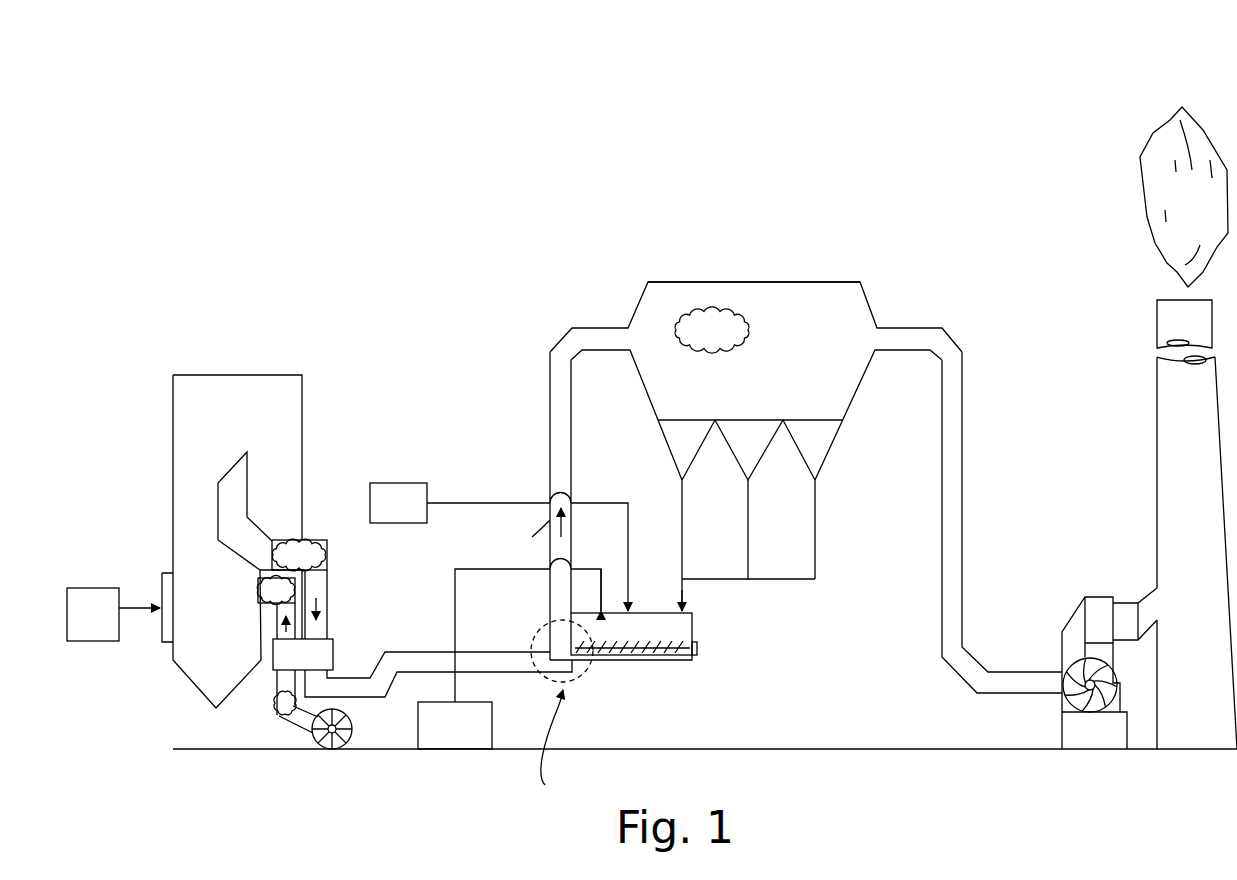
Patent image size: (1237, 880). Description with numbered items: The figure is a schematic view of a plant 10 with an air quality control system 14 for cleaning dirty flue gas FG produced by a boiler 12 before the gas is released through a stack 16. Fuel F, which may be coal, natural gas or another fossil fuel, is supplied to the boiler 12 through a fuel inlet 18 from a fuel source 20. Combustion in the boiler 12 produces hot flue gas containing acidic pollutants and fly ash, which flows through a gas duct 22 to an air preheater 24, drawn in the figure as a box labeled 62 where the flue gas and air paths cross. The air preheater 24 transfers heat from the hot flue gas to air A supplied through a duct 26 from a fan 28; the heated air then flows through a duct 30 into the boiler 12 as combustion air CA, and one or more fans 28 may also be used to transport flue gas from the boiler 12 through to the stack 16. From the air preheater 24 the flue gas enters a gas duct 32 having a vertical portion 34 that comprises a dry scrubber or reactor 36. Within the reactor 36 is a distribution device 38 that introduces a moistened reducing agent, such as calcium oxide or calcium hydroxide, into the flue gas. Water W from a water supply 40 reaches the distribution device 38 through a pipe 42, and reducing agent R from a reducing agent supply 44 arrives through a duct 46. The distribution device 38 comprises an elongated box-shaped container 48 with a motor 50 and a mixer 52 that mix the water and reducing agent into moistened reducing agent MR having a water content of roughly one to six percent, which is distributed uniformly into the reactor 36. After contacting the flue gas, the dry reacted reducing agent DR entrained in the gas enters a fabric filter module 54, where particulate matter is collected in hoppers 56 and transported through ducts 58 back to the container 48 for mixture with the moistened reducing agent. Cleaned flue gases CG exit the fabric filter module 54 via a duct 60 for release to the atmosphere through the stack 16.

The plant 10 is at (837, 168).
The boiler 12 is at (191, 662).
The air quality control system 14 is at (884, 299).
The stack 16 is at (1155, 408).
The fuel inlet 18 is at (162, 638).
The fuel source 20 is at (97, 588).
The gas duct 22 is at (320, 575).
The air preheater 24 is at (270, 667).
The duct 26 is at (277, 715).
The fan 28 is at (340, 743).
The duct 30 is at (273, 618).
The gas duct 32 is at (402, 660).
The vertical portion 34 is at (550, 435).
The reactor 36 is at (571, 528).
The distribution device 38 is at (694, 633).
The water supply 40 is at (398, 483).
The pipe 42 is at (600, 503).
The reducing agent supply 44 is at (492, 730).
The duct 46 is at (455, 593).
The container 48 is at (613, 657).
The motor 50 is at (697, 650).
The mixer 52 is at (627, 648).
The fabric filter module 54 is at (752, 282).
The hoppers 56 is at (861, 497).
The ducts 58 is at (682, 540).
The duct 60 is at (955, 340).
The heat exchanger 62 is at (303, 656).